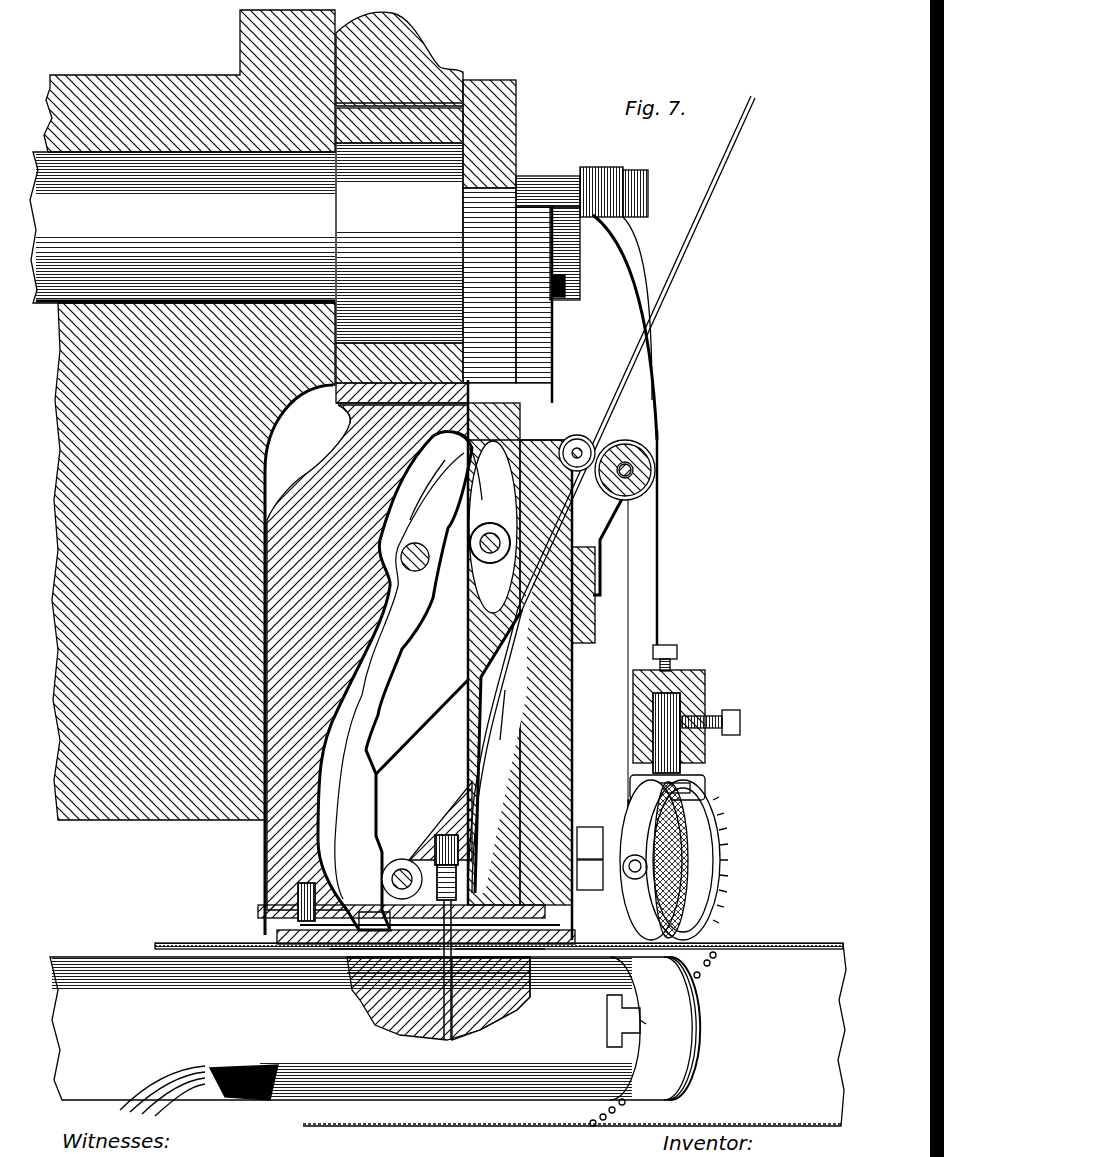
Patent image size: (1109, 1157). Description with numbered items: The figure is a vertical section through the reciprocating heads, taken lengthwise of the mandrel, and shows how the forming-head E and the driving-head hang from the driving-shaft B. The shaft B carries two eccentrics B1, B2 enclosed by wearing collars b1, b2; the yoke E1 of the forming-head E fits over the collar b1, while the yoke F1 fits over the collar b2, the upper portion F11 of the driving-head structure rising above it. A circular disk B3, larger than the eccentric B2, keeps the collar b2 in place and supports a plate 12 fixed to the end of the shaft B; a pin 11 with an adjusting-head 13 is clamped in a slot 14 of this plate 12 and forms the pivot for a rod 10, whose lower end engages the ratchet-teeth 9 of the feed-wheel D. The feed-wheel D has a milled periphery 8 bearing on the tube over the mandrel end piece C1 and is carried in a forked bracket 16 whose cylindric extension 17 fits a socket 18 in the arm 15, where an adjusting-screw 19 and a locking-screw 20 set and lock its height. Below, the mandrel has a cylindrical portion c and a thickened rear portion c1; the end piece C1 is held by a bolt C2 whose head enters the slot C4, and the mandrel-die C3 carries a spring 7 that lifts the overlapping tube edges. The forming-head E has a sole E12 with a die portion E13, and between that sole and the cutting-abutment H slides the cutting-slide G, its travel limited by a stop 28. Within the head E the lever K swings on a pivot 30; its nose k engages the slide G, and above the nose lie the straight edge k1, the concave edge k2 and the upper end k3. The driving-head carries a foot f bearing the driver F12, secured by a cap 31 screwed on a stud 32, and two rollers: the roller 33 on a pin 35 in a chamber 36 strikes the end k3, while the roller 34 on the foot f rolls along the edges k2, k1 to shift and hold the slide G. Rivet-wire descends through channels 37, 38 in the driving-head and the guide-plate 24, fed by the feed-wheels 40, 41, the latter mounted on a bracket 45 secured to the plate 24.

The forming-head E is at (399, 53).
The wearing collar b1 is at (430, 130).
The frame column F'' F11 is at (502, 98).
The wearing collar b2 is at (520, 168).
The eccentric B2 is at (473, 250).
The pin or stud 11 is at (586, 168).
The adjusting-head 13 is at (646, 186).
The driving-shaft B is at (182, 227).
The eccentric B1 is at (392, 243).
The plate 12 is at (570, 255).
The slot 14 is at (566, 296).
The circular plate or disk B3 is at (553, 350).
The yoke E1 is at (333, 462).
The yoke F1 is at (496, 428).
The feed-wheel 40 is at (579, 434).
The feed-wheel 41 is at (642, 450).
The upper end of lever k3 is at (427, 490).
The space or chamber 36 is at (484, 473).
The roller 33 is at (490, 533).
The pin 35 is at (490, 563).
The pivot 30 is at (416, 571).
The bracket 45 is at (606, 523).
The rod 10 is at (650, 574).
The lever K is at (382, 676).
The adjusting-screw 19 is at (676, 648).
The socket 18 is at (702, 674).
The arm 15 is at (706, 706).
The locking-screw 20 is at (742, 724).
The cylindric extension 17 is at (706, 754).
The forked bracket 16 is at (697, 790).
The channel 38 is at (580, 646).
The curved edge of lever k2 is at (424, 770).
The channel 37 is at (511, 714).
The guide-plate 24 is at (580, 792).
The foot f is at (446, 833).
The stud 32 is at (440, 862).
The roller 34 is at (403, 858).
The removable cap 31 is at (478, 860).
The straight edge of lever k1 is at (372, 866).
The nose k is at (490, 884).
The stop 28 is at (297, 895).
The cutting-slide G is at (258, 925).
The cutting-abutment H is at (590, 890).
The feed-wheel D is at (651, 860).
The milled periphery 8 is at (680, 892).
The ratchet-teeth 9 is at (706, 906).
The thickened portion of mandrel c1 is at (156, 1044).
The sole E12 is at (372, 950).
The die portion E13 is at (395, 950).
The mandrel-die C3 is at (632, 1024).
The driver F12 is at (438, 1003).
The cylindrical portion of mandrel c is at (223, 1076).
The bolt C2 is at (690, 998).
The slot C4 is at (606, 1025).
The end piece C1 is at (668, 1028).
The spring 7 is at (506, 1010).